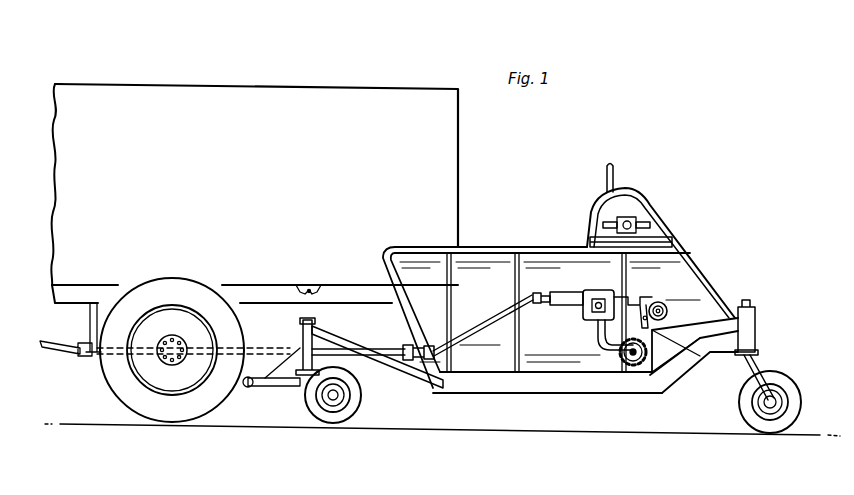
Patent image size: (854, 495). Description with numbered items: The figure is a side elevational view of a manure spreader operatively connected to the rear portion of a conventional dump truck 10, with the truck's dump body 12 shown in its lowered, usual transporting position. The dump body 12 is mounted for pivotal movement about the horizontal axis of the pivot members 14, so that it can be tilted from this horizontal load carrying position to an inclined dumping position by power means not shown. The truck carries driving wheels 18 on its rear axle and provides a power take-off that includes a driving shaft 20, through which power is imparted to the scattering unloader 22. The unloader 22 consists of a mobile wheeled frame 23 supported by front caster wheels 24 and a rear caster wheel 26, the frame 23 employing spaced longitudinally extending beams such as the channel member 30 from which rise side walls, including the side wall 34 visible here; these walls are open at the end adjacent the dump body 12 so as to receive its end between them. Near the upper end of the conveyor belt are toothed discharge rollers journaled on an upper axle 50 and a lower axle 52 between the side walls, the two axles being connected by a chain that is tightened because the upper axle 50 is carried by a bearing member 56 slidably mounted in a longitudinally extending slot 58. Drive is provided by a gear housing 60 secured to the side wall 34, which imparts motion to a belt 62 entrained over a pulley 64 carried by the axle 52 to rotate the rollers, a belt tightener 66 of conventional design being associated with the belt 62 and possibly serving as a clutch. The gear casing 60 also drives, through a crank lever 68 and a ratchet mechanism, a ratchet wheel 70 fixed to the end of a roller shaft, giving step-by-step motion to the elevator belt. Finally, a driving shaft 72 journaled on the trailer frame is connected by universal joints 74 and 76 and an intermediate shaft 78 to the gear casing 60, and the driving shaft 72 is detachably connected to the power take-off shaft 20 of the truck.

The dump truck 10 is at (82, 78).
The dump body 12 is at (398, 104).
The pivot members 14 is at (317, 297).
The driving wheels 18 is at (212, 404).
The driving shaft 20 is at (172, 335).
The scattering unloader 22 is at (578, 196).
The frame 23 is at (555, 402).
The front caster wheels 24 is at (316, 404).
The rear caster wheel 26 is at (752, 407).
The channel member 30 is at (402, 382).
The side wall 34 is at (485, 262).
The axle 50 is at (627, 222).
The axle 52 is at (690, 300).
The bearing member 56 is at (640, 220).
The slot 58 is at (651, 226).
The gear housing 60 is at (595, 296).
The belt 62 is at (694, 355).
The pulley 64 is at (668, 313).
The belt tightener 66 is at (632, 297).
The crank lever 68 is at (598, 338).
The ratchet wheel 70 is at (648, 380).
The driving shaft 72 is at (392, 348).
The universal joint 74 is at (430, 346).
The universal joint 76 is at (540, 306).
The intermediate shaft 78 is at (468, 330).